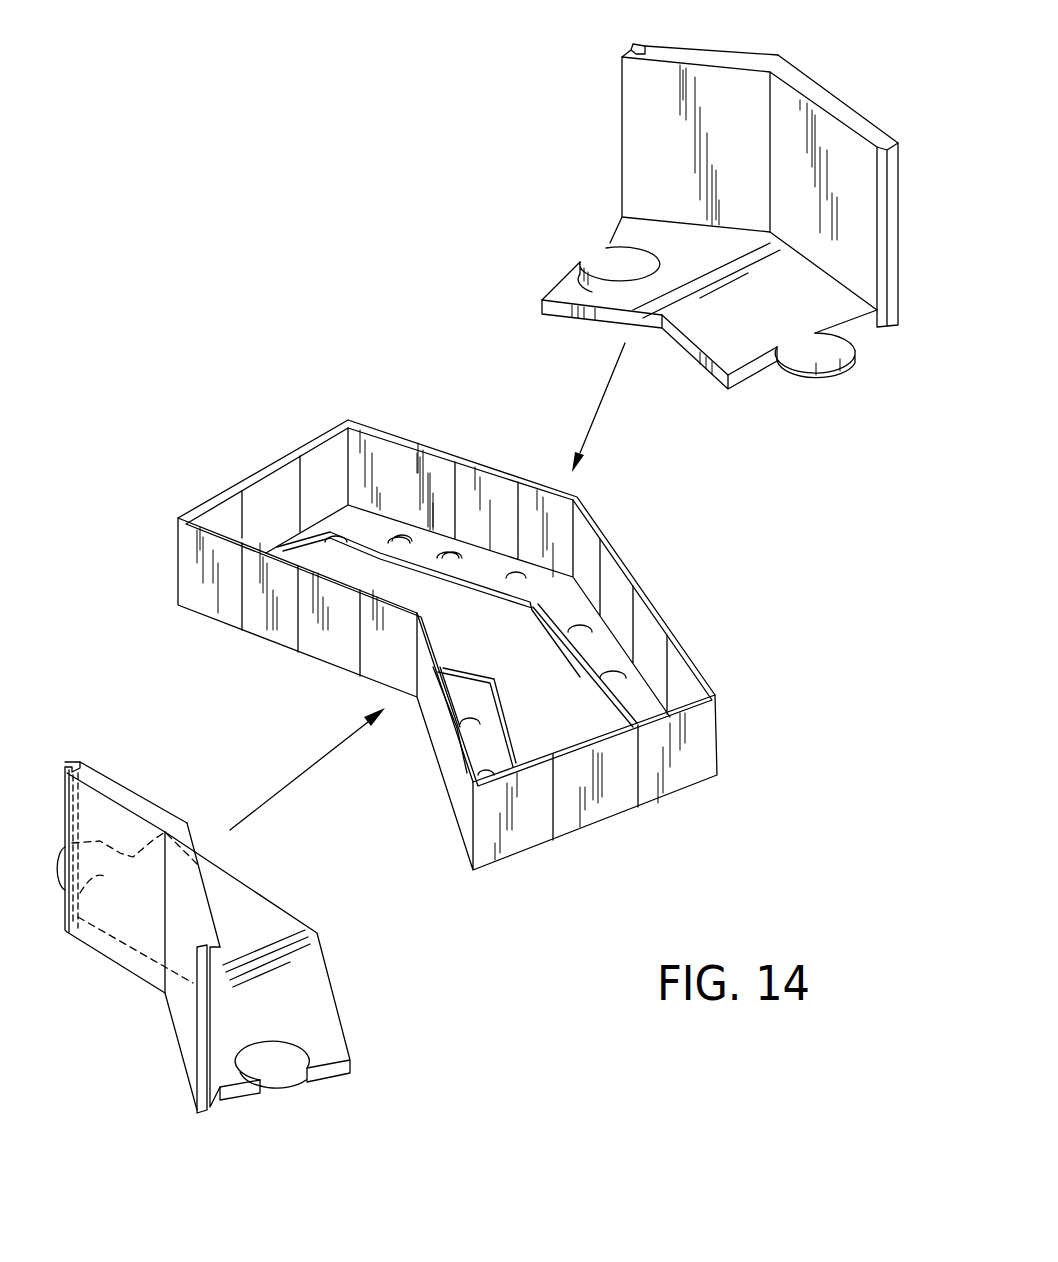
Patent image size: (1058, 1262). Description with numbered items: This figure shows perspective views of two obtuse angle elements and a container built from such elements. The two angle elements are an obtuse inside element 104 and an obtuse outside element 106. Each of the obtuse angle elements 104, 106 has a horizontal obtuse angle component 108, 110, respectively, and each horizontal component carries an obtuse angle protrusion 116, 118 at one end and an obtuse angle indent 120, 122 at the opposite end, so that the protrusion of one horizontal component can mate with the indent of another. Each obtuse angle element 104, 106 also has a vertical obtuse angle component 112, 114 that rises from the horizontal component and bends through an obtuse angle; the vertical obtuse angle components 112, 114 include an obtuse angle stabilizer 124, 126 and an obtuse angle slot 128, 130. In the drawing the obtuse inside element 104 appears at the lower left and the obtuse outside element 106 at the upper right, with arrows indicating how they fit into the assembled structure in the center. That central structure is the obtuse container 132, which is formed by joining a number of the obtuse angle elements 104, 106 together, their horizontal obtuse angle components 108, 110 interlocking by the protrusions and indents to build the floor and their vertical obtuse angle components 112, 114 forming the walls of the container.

The obtuse inside element 104 is at (252, 921).
The obtuse outside element 106 is at (702, 241).
The horizontal obtuse angle component 108 is at (237, 907).
The horizontal obtuse angle component 110 is at (620, 293).
The vertical obtuse angle component 112 is at (72, 817).
The vertical obtuse angle component 114 is at (642, 115).
The obtuse angle protrusion 116 is at (103, 842).
The obtuse angle protrusion 118 is at (807, 360).
The obtuse angle indent 120 is at (287, 1048).
The obtuse angle indent 122 is at (597, 250).
The obtuse angle stabilizer 124 is at (68, 763).
The obtuse angle stabilizer 126 is at (897, 333).
The obtuse angle slot 128 is at (210, 1000).
The obtuse angle slot 130 is at (630, 50).
The obtuse container 132 is at (243, 425).